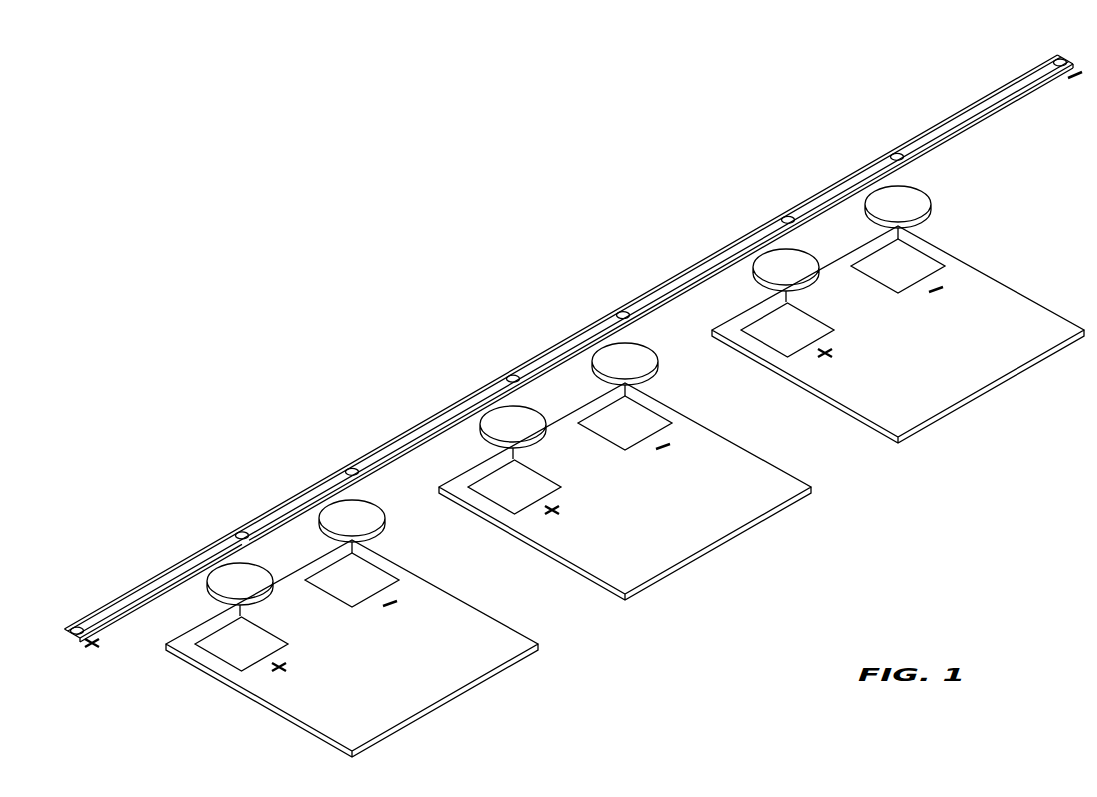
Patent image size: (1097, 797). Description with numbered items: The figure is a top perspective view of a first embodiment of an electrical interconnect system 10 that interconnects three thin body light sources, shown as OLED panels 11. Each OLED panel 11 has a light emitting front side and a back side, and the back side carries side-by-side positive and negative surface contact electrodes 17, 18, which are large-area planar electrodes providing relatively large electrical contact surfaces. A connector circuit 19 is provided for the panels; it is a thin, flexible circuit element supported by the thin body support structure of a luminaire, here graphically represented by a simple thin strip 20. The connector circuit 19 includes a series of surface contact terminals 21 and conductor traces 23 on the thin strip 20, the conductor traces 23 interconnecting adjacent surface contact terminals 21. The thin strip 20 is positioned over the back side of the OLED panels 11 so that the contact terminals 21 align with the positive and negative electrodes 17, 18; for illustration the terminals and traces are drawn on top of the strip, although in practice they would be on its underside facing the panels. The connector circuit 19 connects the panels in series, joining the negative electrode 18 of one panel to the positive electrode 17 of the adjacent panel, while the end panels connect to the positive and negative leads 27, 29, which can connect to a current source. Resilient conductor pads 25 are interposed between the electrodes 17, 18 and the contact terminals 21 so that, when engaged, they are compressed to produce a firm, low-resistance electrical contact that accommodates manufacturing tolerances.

The electrical interconnect system 10 is at (574, 394).
The OLED panel 11 is at (458, 695).
The positive surface contact electrode 17 is at (222, 648).
The negative surface contact electrode 18 is at (335, 577).
The connector circuit 19 is at (410, 413).
The thin strip 20 is at (265, 520).
The surface contact terminal 21 is at (346, 465).
The conductor trace 23 is at (138, 587).
The resilient conductor pad 25 is at (207, 592).
The positive lead 27 is at (75, 626).
The negative lead 29 is at (1059, 58).